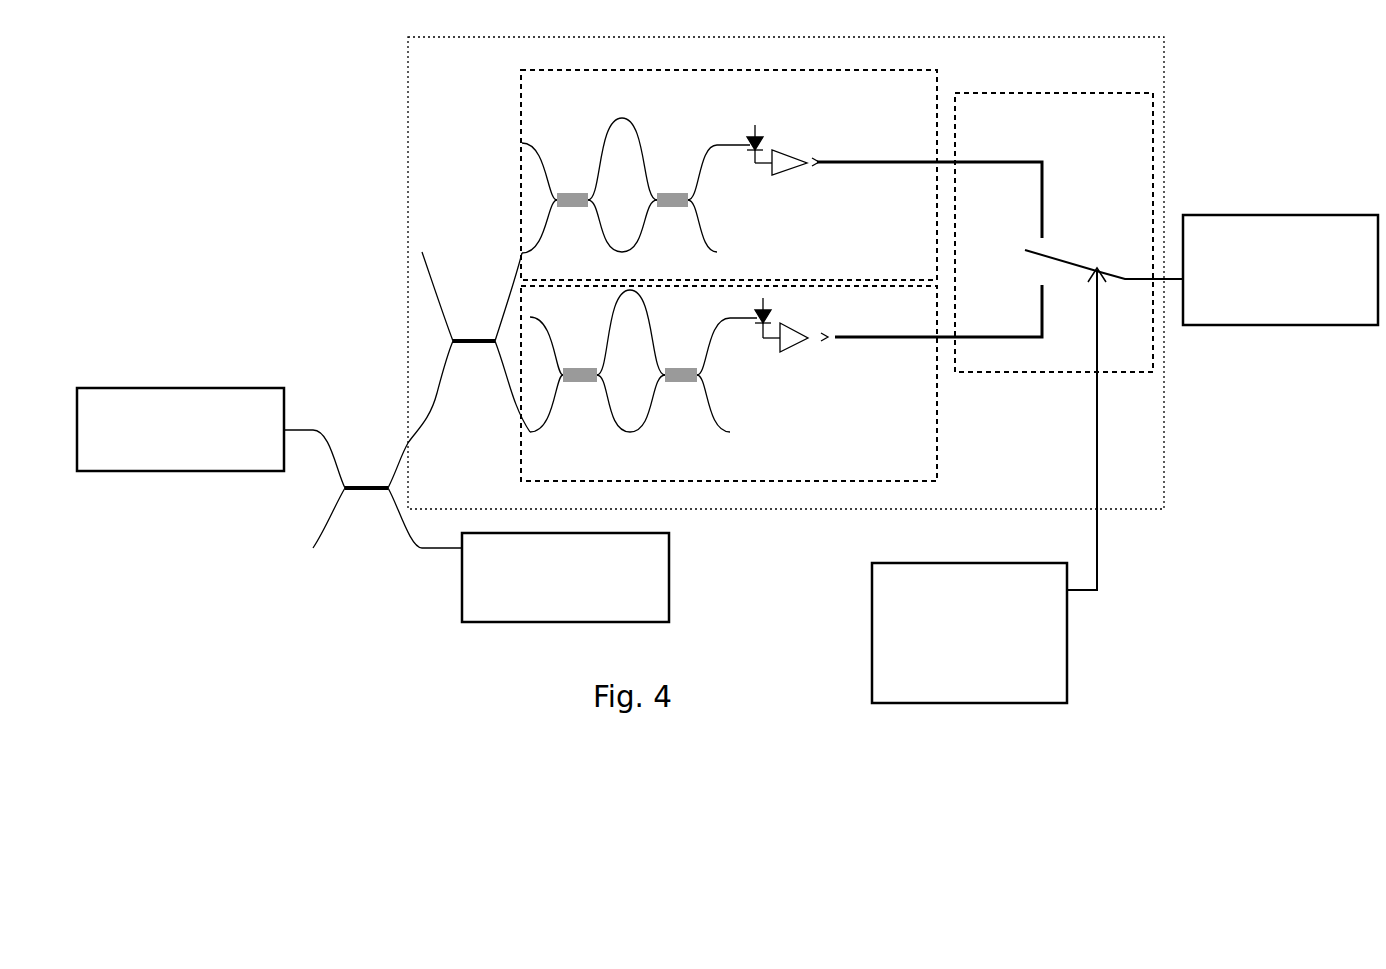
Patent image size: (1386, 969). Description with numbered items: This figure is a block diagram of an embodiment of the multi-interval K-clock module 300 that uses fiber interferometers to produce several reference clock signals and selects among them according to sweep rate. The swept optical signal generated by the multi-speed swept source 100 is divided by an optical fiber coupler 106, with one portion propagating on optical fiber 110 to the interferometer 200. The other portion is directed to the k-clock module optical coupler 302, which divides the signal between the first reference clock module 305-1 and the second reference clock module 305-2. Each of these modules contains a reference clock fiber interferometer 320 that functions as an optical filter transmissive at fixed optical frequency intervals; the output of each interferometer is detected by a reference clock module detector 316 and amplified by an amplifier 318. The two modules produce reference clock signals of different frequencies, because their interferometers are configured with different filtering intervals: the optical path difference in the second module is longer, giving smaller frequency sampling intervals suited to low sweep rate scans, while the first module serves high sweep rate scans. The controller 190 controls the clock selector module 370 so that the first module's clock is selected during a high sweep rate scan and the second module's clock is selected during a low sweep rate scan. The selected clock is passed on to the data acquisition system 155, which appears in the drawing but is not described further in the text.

The multi-speed swept source 100 is at (180, 429).
The optical fiber coupler 106 is at (367, 487).
The optical fiber 110 is at (440, 548).
The data acquisition system 155 is at (1314, 215).
The controller 190 is at (969, 633).
The interferometer 200 is at (565, 577).
The multi-interval K-clock module 300 is at (786, 273).
The k-clock module optical coupler 302 is at (473, 341).
The first reference clock module 305-1 is at (729, 383).
The second reference clock module 305-2 is at (729, 175).
The reference clock module detector 316 is at (747, 140).
The amplifier 318 is at (793, 158).
The reference clock fiber interferometer 320 is at (639, 275).
The clock selector module 370 is at (1000, 341).